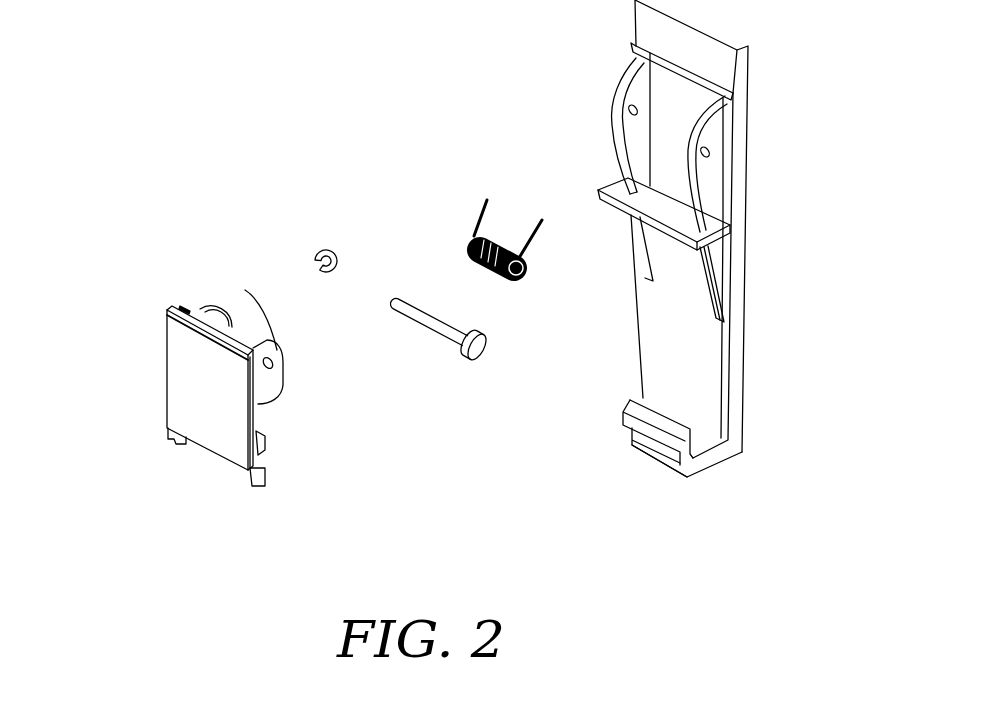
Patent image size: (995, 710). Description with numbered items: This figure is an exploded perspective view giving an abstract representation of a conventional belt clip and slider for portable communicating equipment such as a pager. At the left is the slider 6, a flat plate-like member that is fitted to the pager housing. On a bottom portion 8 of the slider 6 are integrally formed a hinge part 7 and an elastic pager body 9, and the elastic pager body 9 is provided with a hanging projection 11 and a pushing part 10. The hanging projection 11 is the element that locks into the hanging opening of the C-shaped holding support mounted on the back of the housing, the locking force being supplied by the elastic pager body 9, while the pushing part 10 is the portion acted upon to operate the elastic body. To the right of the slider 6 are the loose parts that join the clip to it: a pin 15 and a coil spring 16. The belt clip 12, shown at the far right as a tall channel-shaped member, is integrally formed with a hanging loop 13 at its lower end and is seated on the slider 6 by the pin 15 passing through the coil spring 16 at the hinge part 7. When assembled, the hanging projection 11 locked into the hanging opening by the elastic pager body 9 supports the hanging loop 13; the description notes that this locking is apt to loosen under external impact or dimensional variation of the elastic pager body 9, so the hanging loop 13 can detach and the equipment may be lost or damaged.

The slider 6 is at (141, 372).
The hinge part 7 is at (218, 305).
The bottom portion 8 is at (167, 308).
The elastic pager body 9 is at (184, 307).
The pushing part 10 is at (181, 446).
The hanging projection 11 is at (262, 456).
The belt clip 12 is at (742, 202).
The hanging loop 13 is at (653, 438).
The pin 15 is at (424, 323).
The coil spring 16 is at (466, 252).